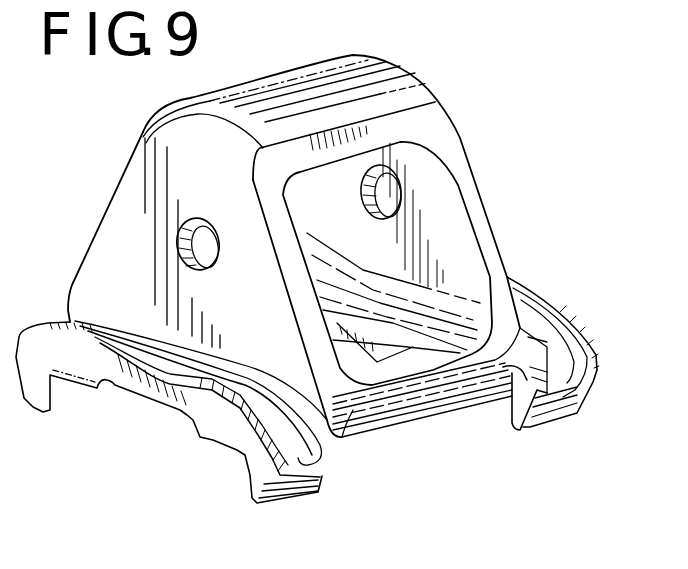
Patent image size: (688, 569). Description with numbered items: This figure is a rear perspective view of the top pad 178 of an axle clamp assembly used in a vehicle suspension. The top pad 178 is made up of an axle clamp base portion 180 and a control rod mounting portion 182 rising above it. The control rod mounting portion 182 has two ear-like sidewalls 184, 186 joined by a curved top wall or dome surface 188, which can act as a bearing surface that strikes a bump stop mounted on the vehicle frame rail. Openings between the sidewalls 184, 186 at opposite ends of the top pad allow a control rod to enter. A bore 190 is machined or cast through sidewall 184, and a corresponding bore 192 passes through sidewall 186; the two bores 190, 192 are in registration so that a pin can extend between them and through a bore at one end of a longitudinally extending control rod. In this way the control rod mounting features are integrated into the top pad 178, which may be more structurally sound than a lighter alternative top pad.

The top pad 178 is at (474, 101).
The axle clamp base portion 180 is at (558, 387).
The control rod mounting portion 182 is at (495, 222).
The sidewall 184 is at (268, 311).
The sidewall 186 is at (448, 234).
The curved top wall or dome surface 188 is at (327, 101).
The bore 190 is at (202, 242).
The bore 192 is at (384, 190).